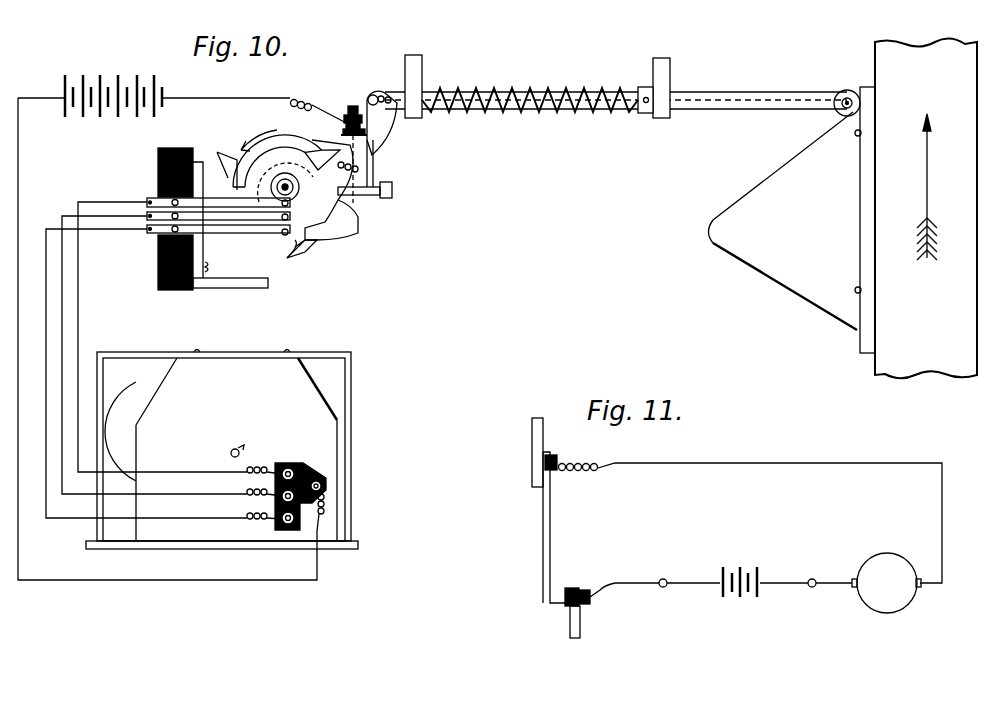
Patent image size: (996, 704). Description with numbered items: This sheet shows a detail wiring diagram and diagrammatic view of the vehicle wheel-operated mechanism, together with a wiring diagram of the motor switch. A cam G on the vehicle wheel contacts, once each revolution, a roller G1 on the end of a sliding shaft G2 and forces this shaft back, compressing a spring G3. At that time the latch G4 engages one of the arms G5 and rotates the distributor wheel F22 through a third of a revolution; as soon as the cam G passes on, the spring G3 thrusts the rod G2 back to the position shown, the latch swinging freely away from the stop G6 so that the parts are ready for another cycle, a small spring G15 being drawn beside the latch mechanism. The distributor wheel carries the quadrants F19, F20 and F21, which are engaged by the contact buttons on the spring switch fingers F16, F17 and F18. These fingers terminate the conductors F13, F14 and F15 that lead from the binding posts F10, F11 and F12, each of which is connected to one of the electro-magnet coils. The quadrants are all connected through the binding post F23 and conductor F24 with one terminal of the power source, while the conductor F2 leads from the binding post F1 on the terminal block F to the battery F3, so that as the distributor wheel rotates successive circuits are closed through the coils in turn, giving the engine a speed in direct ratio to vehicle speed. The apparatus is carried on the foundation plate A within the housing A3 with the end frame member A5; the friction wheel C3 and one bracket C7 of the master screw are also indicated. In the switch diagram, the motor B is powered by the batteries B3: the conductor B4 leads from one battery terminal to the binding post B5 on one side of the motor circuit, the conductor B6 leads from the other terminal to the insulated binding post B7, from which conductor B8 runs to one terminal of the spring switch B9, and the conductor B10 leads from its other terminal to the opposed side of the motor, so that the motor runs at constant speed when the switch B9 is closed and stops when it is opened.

In FIG. 10, the battery F3 is at (90, 78).
In FIG. 10, the conductor F24 is at (208, 84).
In FIG. 10, the terminal block F is at (293, 463).
In FIG. 10, the spring switch finger F16 is at (223, 209).
In FIG. 10, the spring switch finger F17 is at (236, 222).
In FIG. 10, the spring switch finger F18 is at (283, 240).
In FIG. 10, the conductor F13 is at (78, 281).
In FIG. 10, the conductor F14 is at (62, 308).
In FIG. 10, the conductor F15 is at (46, 333).
In FIG. 10, the foundation plate A is at (165, 550).
In FIG. 10, the friction wheel C3 is at (148, 383).
In FIG. 10, the end frame member A5 is at (300, 398).
In FIG. 10, the housing A3 is at (347, 418).
In FIG. 10, the binding post F1 is at (325, 497).
In FIG. 10, the binding post F10 is at (276, 475).
In FIG. 10, the binding post F11 is at (276, 497).
In FIG. 10, the binding post F12 is at (276, 519).
In FIG. 10, the conductor F2 is at (218, 580).
In FIG. 10, the quadrant F21 is at (280, 147).
In FIG. 10, the distributor wheel F22 is at (303, 150).
In FIG. 10, the arm G5 is at (225, 158).
In FIG. 10, the quadrant F19 is at (348, 212).
In FIG. 10, the quadrant F20 is at (345, 226).
In FIG. 10, the binding post F23 is at (350, 106).
In FIG. 10, the spring G15 is at (360, 166).
In FIG. 10, the stop G6 is at (383, 93).
In FIG. 10, the latch G4 is at (382, 131).
In FIG. 10, the sliding shaft G2 is at (727, 96).
In FIG. 10, the spring G3 is at (525, 92).
In FIG. 10, the roller G1 is at (845, 91).
In FIG. 10, the cam G is at (805, 172).
In FIG. 11, the bracket C7 is at (532, 424).
In FIG. 11, the spring switch B9 is at (550, 517).
In FIG. 11, the conductor B10 is at (697, 466).
In FIG. 11, the conductor B8 is at (628, 587).
In FIG. 11, the insulated binding post B7 is at (664, 578).
In FIG. 11, the conductor B6 is at (693, 586).
In FIG. 11, the batteries B3 is at (741, 574).
In FIG. 11, the conductor B4 is at (784, 587).
In FIG. 11, the binding post B5 is at (814, 578).
In FIG. 11, the electric motor B is at (886, 583).